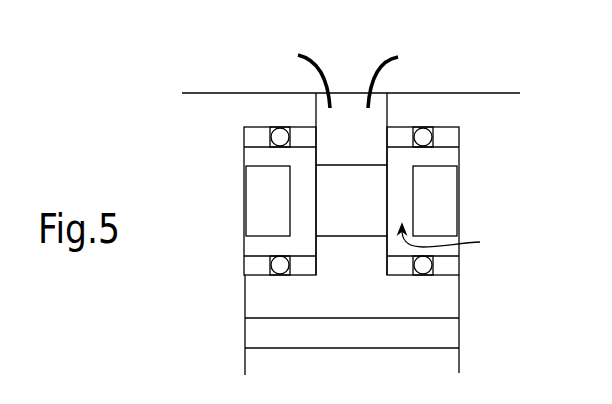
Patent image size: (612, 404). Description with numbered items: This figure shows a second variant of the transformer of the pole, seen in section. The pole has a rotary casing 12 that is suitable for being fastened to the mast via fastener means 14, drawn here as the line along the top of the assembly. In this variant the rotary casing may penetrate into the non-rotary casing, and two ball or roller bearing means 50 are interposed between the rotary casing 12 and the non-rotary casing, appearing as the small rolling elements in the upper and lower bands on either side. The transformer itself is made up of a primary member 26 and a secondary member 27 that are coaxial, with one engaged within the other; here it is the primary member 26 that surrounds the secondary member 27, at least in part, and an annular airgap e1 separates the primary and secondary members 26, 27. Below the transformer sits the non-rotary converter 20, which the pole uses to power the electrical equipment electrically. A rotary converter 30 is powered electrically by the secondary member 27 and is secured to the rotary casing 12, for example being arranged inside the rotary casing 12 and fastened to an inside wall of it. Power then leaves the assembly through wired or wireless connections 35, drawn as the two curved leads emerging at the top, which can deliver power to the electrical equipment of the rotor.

The fastener means 14 is at (218, 93).
The rotary casing 12 is at (315, 105).
The rotary converter 30 is at (375, 117).
The wired or wireless connections 35 is at (324, 62).
The ball or roller bearing means 50 is at (452, 135).
The primary member 26 is at (262, 238).
The secondary member 27 is at (355, 236).
The non-rotary converter 20 is at (368, 345).
The annular airgap e1 is at (453, 239).